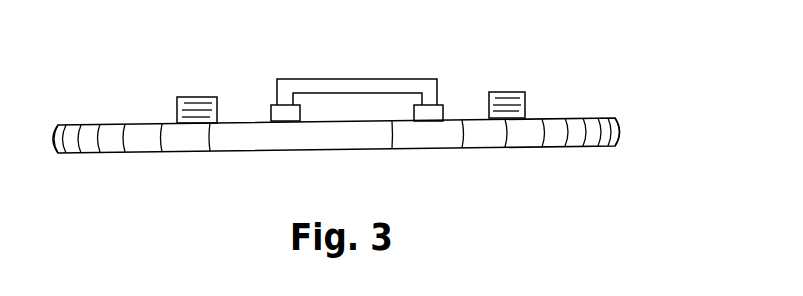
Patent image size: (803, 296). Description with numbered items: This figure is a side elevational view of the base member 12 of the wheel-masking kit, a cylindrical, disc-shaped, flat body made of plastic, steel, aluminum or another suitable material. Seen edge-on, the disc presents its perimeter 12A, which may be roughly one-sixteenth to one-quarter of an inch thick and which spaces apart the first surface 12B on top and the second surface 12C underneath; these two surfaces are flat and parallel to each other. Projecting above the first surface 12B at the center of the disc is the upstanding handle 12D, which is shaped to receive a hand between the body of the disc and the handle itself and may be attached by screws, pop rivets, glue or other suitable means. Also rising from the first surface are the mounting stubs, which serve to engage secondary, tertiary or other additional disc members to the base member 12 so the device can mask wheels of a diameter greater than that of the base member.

The base member 12 is at (611, 60).
The perimeter 12A is at (625, 130).
The first surface 12B is at (553, 115).
The second surface 12C is at (362, 152).
The handle 12D is at (402, 78).